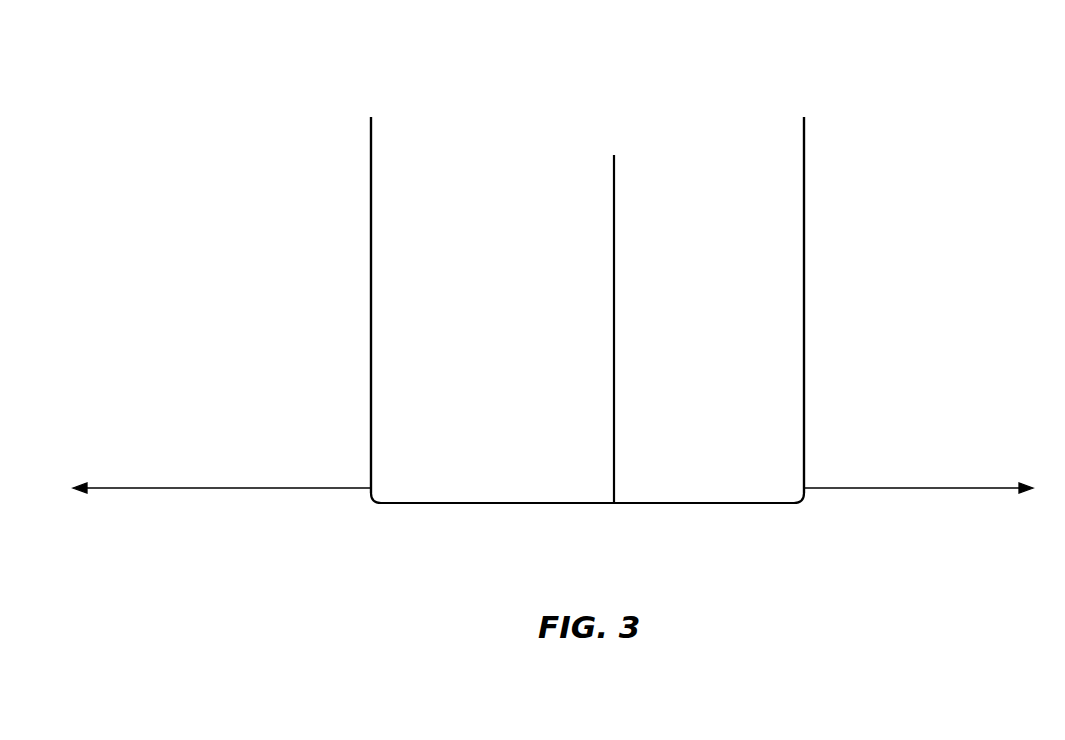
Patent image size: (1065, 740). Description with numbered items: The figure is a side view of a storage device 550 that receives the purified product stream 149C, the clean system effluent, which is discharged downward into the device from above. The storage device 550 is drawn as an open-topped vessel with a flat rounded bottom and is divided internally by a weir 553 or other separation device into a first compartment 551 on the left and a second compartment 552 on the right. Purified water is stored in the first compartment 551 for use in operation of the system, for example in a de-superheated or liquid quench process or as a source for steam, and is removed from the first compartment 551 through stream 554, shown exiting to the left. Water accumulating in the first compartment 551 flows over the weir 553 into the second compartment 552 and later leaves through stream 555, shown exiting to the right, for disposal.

The purified product stream 149C is at (390, 122).
The storage device 550 is at (318, 299).
The first compartment 551 is at (415, 413).
The second compartment 552 is at (778, 411).
The weir 553 is at (614, 420).
The stream 554 is at (222, 477).
The stream 555 is at (918, 477).